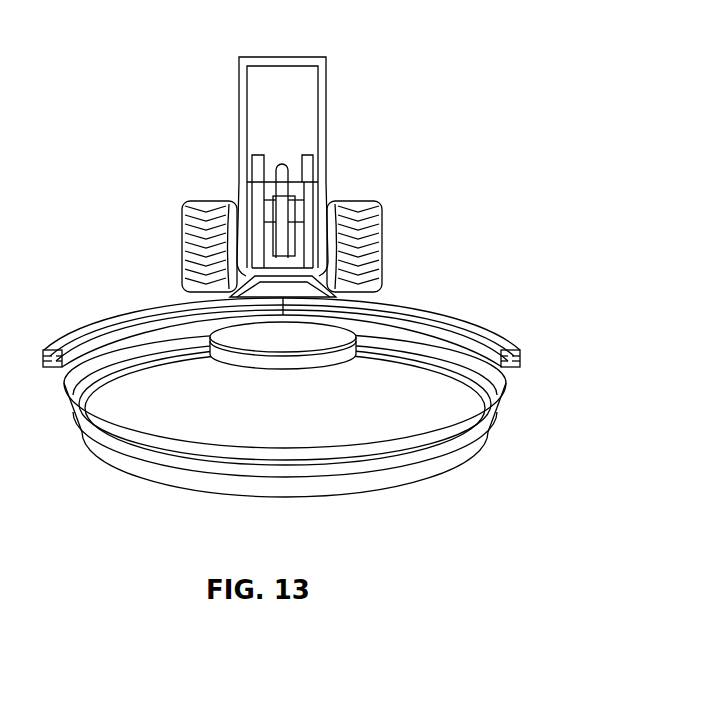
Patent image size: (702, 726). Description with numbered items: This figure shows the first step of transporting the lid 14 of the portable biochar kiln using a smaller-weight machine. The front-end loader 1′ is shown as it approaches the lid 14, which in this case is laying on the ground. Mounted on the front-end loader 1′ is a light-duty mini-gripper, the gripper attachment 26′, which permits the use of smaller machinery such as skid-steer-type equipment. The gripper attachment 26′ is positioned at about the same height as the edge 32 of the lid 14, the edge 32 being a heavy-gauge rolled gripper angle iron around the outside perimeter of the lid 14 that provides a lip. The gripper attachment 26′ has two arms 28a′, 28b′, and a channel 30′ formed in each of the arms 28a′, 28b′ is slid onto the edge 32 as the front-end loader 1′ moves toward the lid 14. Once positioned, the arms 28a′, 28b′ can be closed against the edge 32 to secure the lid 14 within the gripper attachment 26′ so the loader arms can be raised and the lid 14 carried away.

The front-end loader 1′ is at (325, 161).
The lid 14 is at (306, 428).
The gripper attachment 26′ is at (376, 294).
The arm 28a′ is at (110, 318).
The arm 28b′ is at (476, 322).
The channel 30′ is at (56, 372).
The edge 32 is at (486, 412).